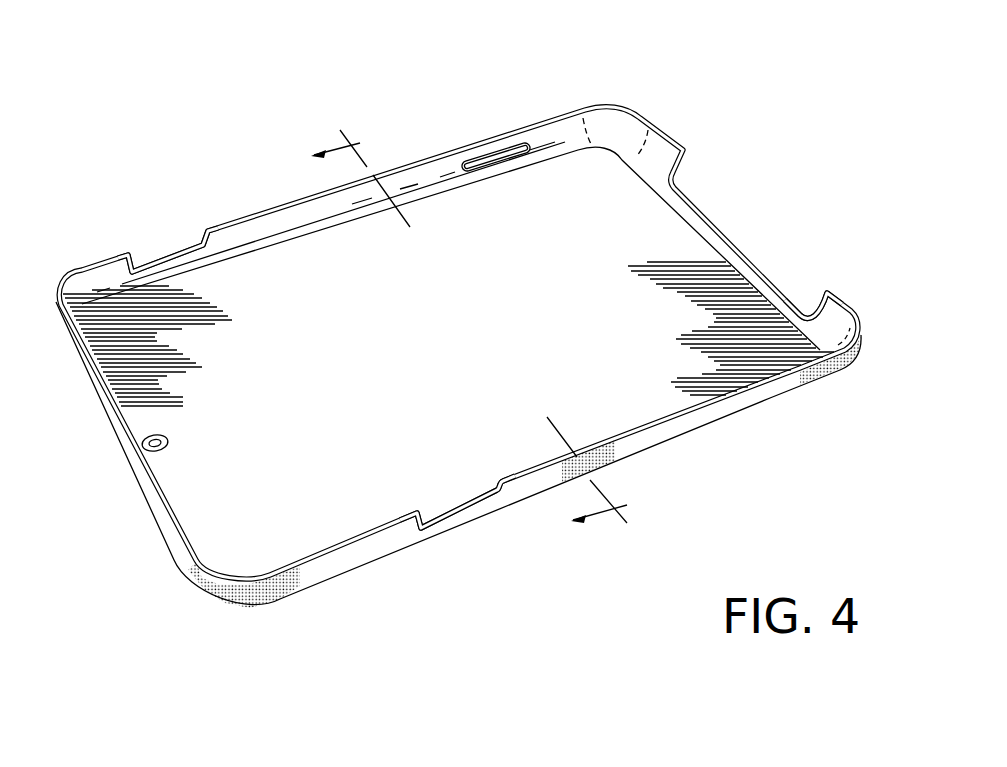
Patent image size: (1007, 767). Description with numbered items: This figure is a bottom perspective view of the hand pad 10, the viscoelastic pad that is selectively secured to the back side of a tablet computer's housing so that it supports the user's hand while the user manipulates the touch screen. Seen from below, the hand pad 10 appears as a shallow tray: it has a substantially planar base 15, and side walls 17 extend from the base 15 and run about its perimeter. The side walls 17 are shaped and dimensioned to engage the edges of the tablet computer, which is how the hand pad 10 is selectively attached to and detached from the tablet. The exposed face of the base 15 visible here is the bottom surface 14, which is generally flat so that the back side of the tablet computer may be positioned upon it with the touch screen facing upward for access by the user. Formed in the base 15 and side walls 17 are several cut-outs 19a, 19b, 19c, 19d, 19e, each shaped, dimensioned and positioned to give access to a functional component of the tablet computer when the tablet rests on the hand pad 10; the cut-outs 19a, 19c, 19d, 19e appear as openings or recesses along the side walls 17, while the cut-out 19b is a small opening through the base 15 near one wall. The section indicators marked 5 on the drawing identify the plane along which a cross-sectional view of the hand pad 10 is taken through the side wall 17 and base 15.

The hand pad 10 is at (448, 342).
The bottom surface 14 is at (328, 480).
The base 15 is at (588, 207).
The side walls 17 is at (548, 120).
The cut-out 19a is at (133, 270).
The cut-out 19b is at (141, 450).
The cut-out 19c is at (484, 152).
The cut-out 19d is at (742, 256).
The cut-out 19e is at (460, 514).
The section line 5- 5 is at (469, 333).